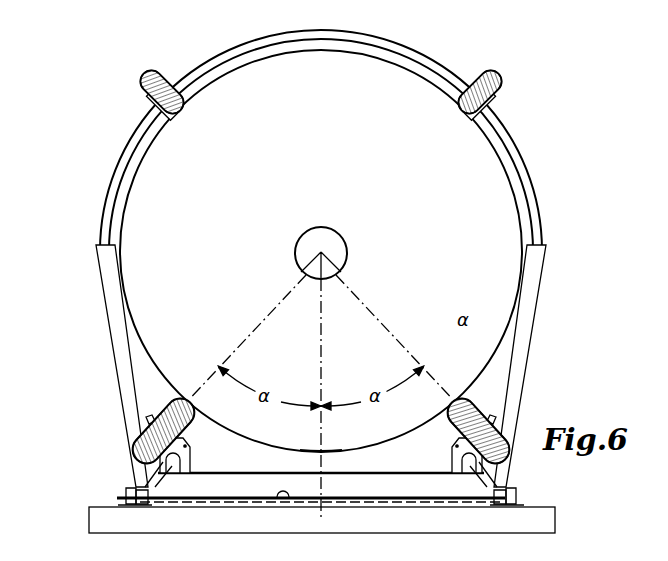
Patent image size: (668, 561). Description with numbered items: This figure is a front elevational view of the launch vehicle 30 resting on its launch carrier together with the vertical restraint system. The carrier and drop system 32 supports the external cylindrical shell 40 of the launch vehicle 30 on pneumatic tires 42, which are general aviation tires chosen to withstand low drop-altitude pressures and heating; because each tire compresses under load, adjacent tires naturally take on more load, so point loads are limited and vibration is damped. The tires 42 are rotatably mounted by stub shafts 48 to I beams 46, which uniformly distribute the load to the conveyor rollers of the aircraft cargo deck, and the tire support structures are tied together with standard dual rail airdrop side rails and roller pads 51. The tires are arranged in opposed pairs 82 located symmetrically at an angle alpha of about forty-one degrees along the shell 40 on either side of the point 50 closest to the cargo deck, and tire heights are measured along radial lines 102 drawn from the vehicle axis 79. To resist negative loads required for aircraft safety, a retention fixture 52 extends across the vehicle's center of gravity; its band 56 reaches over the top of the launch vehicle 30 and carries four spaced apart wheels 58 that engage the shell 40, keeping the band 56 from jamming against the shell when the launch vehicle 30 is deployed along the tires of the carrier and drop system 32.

The launch vehicle 30 is at (143, 162).
The carrier and drop system 32 is at (232, 477).
The external cylindrical shell 40 is at (508, 358).
The pneumatic tires 42 is at (163, 405).
The I beams 46 is at (293, 499).
The stub shafts 48 is at (148, 420).
The point closest to the cargo deck 50 is at (326, 454).
The side rails and roller pads 51 is at (513, 492).
The retention fixture 52 is at (112, 328).
The band 56 is at (432, 57).
The wheels 58 is at (147, 78).
The vehicle axis 79 is at (336, 233).
The opposed pairs of tires 82 is at (322, 534).
The radial lines 102 is at (238, 345).